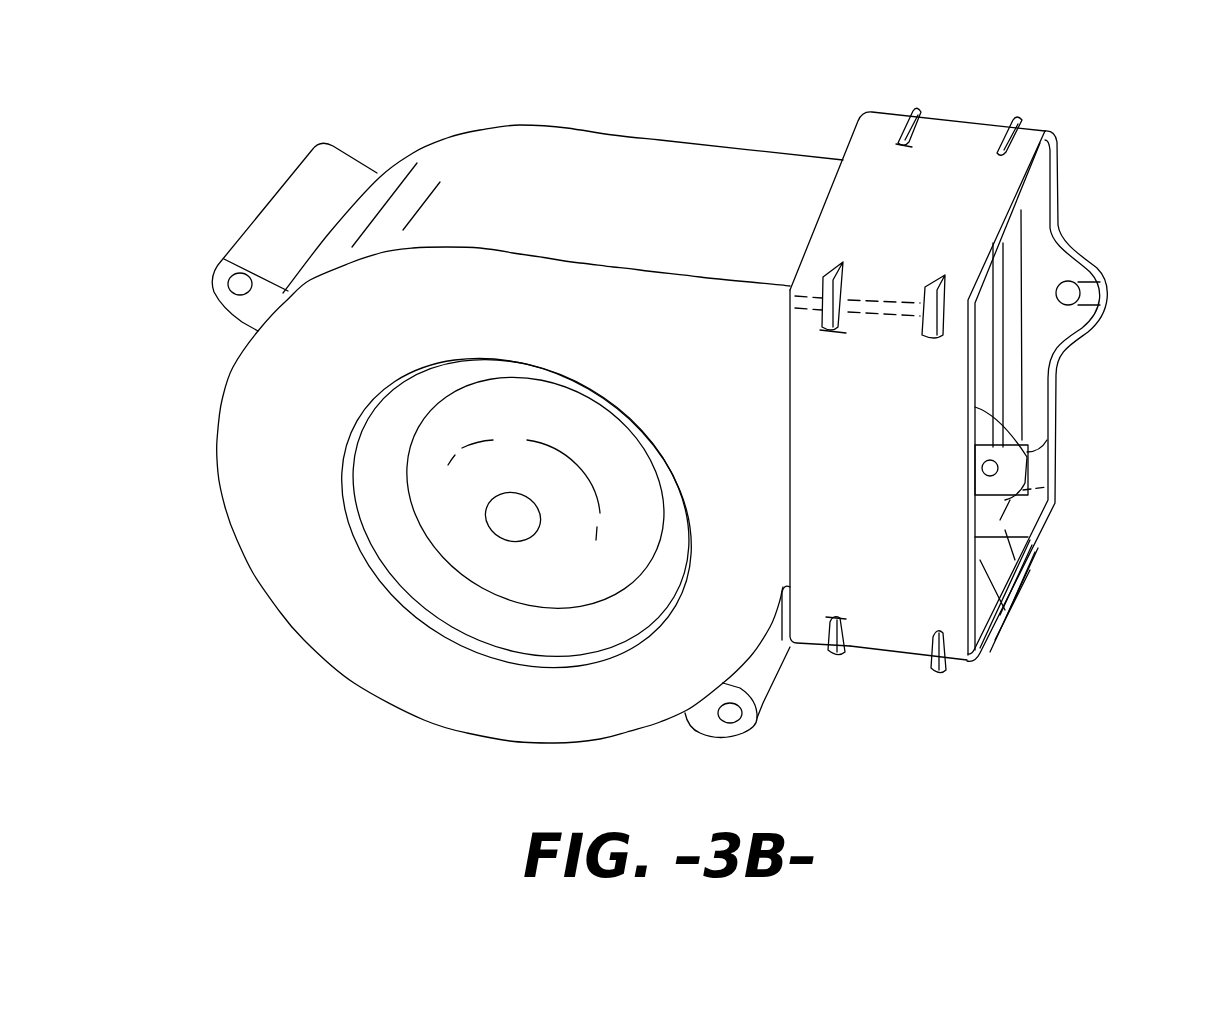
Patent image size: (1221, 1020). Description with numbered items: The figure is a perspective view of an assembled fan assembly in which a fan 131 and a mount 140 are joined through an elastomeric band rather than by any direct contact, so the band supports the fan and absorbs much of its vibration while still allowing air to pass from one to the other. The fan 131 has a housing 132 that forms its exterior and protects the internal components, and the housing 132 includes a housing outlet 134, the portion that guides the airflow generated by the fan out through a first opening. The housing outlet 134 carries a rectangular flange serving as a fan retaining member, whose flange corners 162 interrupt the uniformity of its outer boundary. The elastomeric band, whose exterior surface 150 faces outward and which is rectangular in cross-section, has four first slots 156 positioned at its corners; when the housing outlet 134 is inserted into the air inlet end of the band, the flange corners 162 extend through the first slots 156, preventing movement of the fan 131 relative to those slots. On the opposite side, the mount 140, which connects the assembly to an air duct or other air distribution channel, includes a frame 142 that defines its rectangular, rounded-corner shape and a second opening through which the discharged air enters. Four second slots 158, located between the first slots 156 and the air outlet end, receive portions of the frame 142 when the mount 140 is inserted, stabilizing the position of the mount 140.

The fan 131 is at (497, 95).
The housing 132 is at (460, 735).
The housing outlet 134 is at (788, 650).
The mount 140 is at (1135, 268).
The frame 142 is at (948, 667).
The exterior surface 150 is at (935, 222).
The first slots 156 is at (925, 127).
The second slots 158 is at (1037, 130).
The flange corners 162 is at (917, 112).